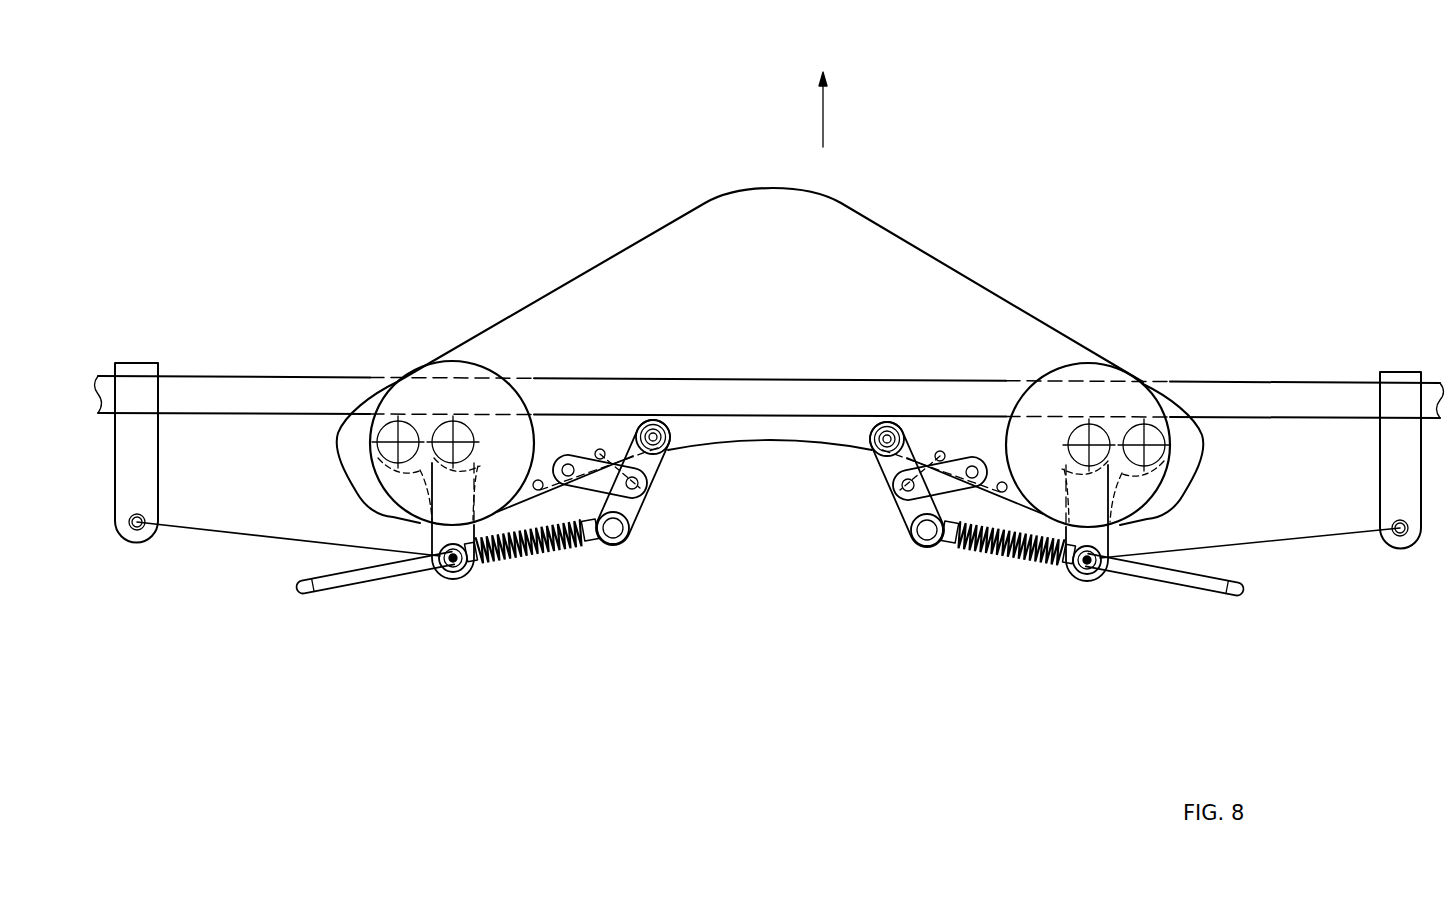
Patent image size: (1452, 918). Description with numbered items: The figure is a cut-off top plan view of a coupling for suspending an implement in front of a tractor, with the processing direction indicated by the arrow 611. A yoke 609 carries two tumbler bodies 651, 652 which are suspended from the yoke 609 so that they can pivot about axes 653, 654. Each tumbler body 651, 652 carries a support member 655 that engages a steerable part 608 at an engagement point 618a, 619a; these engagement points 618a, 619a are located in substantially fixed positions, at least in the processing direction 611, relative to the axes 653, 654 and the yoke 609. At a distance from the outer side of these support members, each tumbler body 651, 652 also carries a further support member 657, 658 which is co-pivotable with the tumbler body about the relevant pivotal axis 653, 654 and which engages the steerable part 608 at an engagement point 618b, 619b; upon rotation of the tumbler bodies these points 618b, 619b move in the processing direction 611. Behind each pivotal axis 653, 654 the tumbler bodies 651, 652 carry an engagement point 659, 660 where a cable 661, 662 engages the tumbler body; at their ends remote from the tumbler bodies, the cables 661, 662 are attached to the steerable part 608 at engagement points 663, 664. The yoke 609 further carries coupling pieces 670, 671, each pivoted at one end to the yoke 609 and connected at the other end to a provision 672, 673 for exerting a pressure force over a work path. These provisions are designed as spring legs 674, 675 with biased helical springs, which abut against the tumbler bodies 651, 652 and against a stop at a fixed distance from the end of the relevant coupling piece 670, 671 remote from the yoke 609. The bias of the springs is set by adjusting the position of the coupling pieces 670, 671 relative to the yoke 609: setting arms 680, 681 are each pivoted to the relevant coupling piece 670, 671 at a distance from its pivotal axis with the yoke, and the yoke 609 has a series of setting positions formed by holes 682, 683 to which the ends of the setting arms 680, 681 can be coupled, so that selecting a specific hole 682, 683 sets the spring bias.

The steerable part 608 is at (1333, 403).
The yoke 609 is at (849, 295).
The processing direction 611 is at (823, 117).
The engagement point 618a is at (453, 438).
The engagement point 618b is at (400, 418).
The engagement point 619a is at (1090, 441).
The engagement point 619b is at (1142, 418).
The tumbler body 651 is at (466, 568).
The tumbler body 652 is at (1074, 572).
The pivotal axis 653 is at (457, 440).
The pivotal axis 654 is at (1086, 446).
The support member 655 is at (484, 440).
The co-pivotable support member 657 is at (388, 430).
The co-pivotable support member 658 is at (1152, 407).
The engagement point 659 is at (448, 573).
The engagement point 660 is at (1091, 575).
The cable 661 is at (245, 542).
The cable 662 is at (1294, 542).
The engagement point 663 is at (137, 535).
The engagement point 664 is at (1400, 542).
The coupling piece 670 is at (657, 461).
The coupling piece 671 is at (883, 463).
The provision for exerting a pressure force 672 is at (546, 572).
The provision for exerting a pressure force 673 is at (994, 572).
The spring leg 674 is at (575, 548).
The spring leg 675 is at (967, 550).
The setting arm 680 is at (596, 488).
The setting arm 681 is at (944, 488).
The holes 682 is at (596, 452).
The holes 683 is at (988, 443).